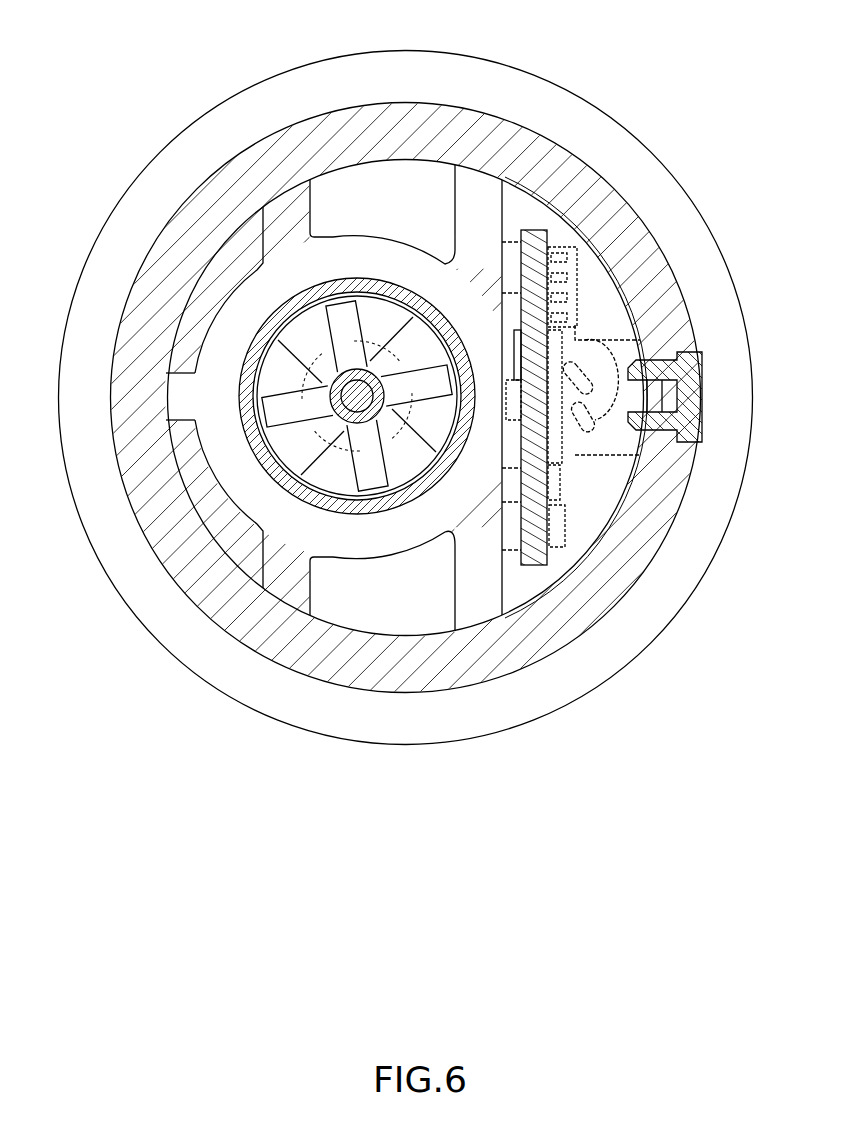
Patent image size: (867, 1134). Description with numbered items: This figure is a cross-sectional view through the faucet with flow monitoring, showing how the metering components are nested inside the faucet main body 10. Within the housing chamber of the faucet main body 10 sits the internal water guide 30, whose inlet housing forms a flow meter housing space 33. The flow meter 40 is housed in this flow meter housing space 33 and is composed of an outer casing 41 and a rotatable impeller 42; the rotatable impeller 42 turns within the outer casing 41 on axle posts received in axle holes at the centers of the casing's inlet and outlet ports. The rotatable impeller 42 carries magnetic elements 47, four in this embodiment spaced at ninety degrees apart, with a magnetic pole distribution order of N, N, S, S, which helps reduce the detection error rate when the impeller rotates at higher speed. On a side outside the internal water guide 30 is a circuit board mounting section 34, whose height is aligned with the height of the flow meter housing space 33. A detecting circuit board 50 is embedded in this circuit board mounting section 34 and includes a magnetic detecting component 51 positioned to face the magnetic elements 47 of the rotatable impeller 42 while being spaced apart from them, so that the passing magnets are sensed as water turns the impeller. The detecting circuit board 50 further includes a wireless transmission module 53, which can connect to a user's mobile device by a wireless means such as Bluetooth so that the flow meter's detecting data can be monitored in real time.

The faucet main body 10 is at (197, 103).
The internal water guide 30 is at (310, 157).
The flow meter housing space 33 is at (308, 510).
The circuit board mounting section 34 is at (507, 468).
The flow meter 40 is at (242, 363).
The outer casing 41 is at (355, 500).
The rotatable impeller 42 is at (313, 353).
The magnetic element 47 is at (453, 264).
The detecting circuit board 50 is at (540, 232).
The magnetic detecting component 51 is at (507, 405).
The wireless transmission module 53 is at (567, 360).